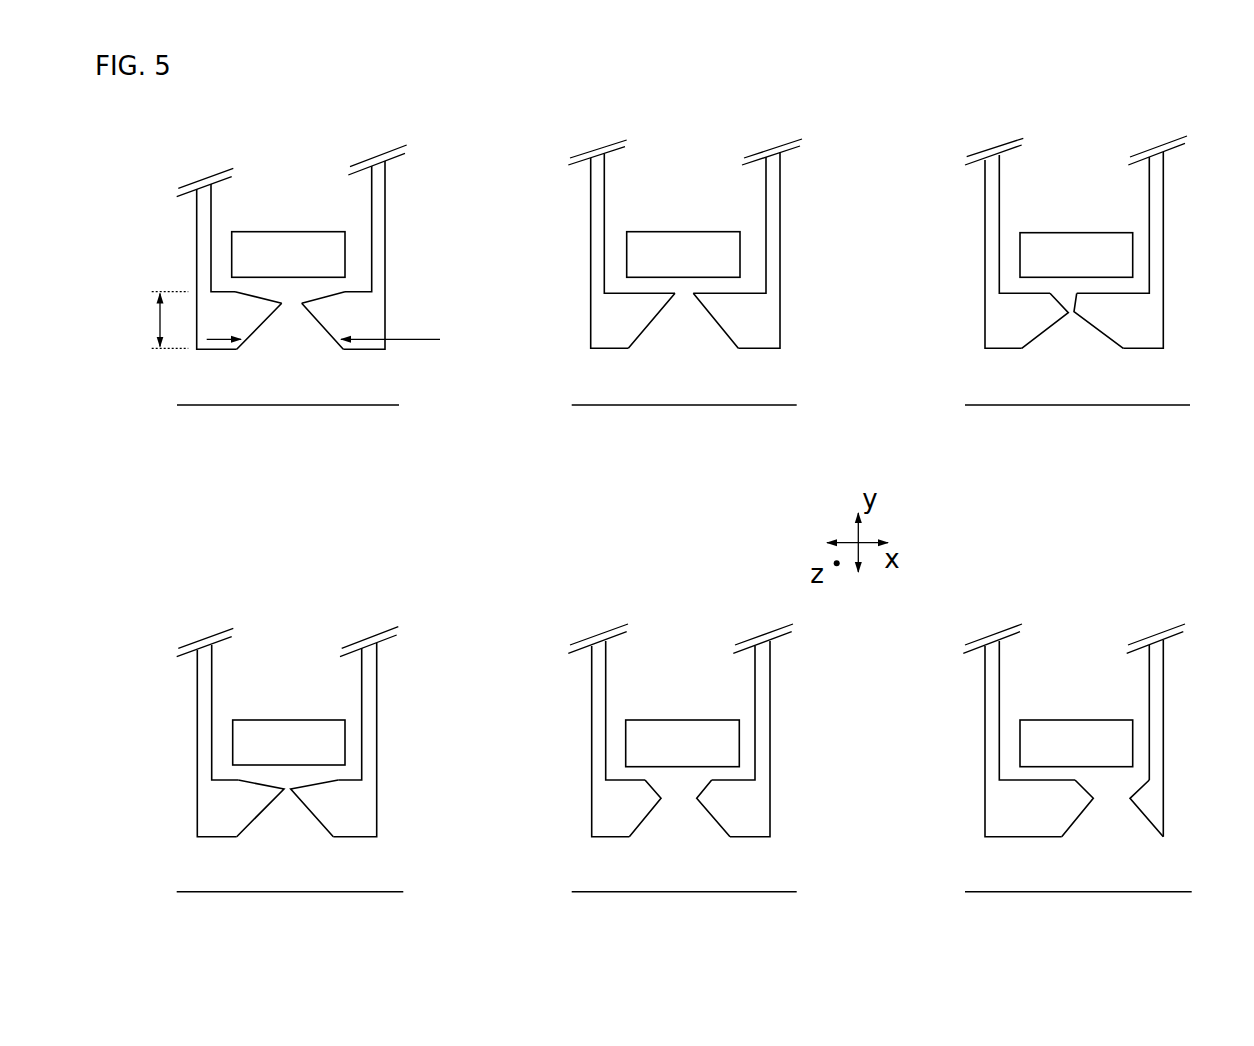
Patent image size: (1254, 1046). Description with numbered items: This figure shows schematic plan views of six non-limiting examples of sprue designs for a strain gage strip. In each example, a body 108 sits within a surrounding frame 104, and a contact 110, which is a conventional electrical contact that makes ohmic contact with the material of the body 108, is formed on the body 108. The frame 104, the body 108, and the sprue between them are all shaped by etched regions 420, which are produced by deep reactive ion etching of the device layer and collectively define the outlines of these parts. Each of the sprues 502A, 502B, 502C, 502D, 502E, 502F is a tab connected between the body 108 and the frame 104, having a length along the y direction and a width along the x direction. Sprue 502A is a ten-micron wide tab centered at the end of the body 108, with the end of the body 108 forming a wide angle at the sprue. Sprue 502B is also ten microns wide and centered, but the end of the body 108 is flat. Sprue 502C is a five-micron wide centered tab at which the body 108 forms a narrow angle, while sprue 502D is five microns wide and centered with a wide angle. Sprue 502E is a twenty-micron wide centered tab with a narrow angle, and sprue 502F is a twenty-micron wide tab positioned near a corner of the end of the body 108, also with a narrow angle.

The frame 104 is at (221, 390).
The body 108 is at (300, 205).
The contacts 110 is at (272, 243).
The etched regions 420 is at (367, 330).
The sprue 502A is at (290, 327).
The sprue 502B is at (683, 327).
The sprue 502C is at (1072, 328).
The sprue 502D is at (285, 813).
The sprue 502E is at (683, 815).
The sprue 502F is at (1105, 815).